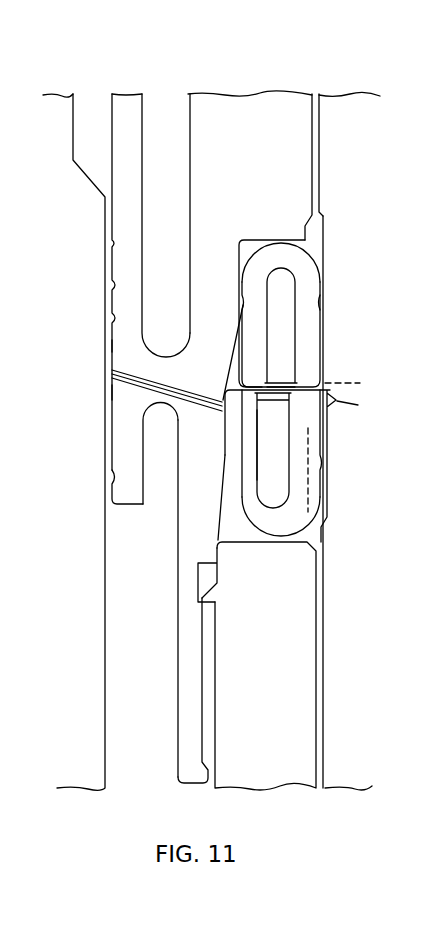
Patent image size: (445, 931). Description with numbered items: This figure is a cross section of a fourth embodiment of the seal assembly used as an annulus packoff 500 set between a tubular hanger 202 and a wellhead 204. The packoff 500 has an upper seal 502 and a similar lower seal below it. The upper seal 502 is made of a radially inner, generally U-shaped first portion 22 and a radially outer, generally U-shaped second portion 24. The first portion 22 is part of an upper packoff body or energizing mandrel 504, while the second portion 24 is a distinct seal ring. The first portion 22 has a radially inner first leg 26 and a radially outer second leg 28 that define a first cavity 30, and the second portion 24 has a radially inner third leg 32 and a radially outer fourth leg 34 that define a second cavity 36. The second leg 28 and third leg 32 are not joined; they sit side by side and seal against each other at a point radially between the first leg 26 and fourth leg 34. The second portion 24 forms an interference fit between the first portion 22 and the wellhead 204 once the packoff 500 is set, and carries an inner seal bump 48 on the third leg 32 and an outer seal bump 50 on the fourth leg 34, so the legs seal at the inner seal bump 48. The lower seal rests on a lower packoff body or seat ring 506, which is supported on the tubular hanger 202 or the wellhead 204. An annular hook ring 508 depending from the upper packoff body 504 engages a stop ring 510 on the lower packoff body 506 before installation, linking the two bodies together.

The packoff 500 is at (306, 84).
The upper seal 502 is at (340, 283).
The upper packoff body 504 is at (270, 137).
The lower packoff body 506 is at (317, 681).
The annular hook ring 508 is at (207, 762).
The stop ring 510 is at (200, 605).
The tubular hanger 202 is at (88, 767).
The wellhead 204 is at (372, 767).
The first portion 22 is at (108, 346).
The second portion 24 is at (279, 232).
The first leg 26 is at (117, 249).
The second leg 28 is at (190, 255).
The first cavity 30 is at (175, 331).
The third leg 32 is at (246, 364).
The fourth leg 34 is at (318, 349).
The second cavity 36 is at (292, 311).
The inner seal bump 48 is at (236, 307).
The outer seal bump 50 is at (308, 278).